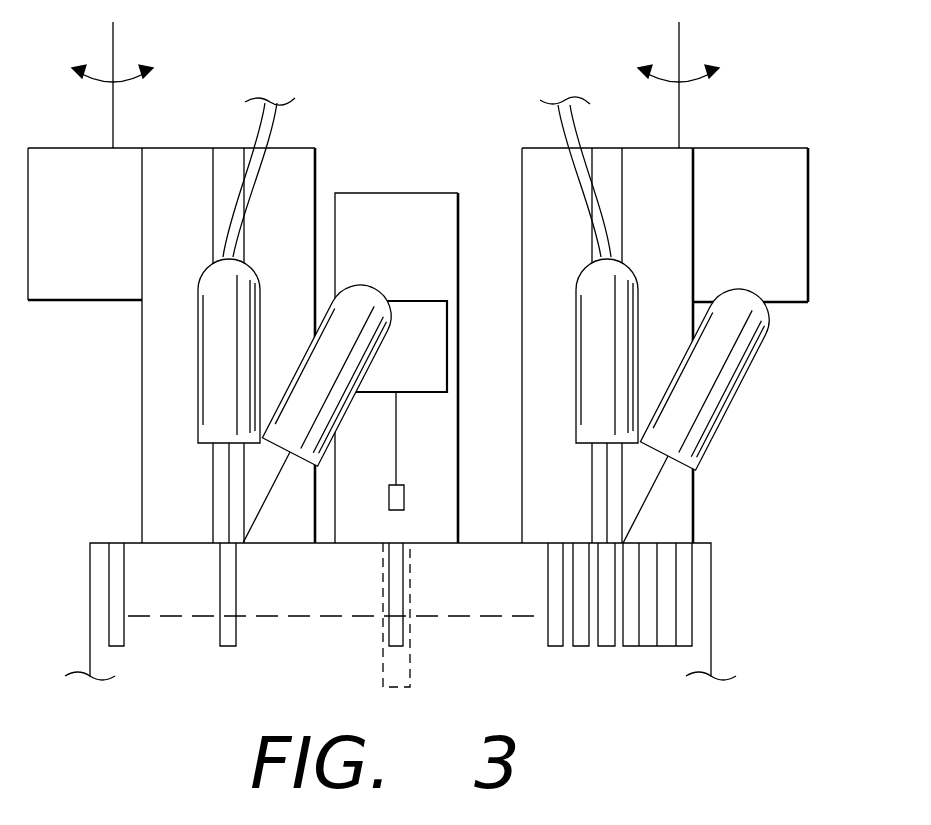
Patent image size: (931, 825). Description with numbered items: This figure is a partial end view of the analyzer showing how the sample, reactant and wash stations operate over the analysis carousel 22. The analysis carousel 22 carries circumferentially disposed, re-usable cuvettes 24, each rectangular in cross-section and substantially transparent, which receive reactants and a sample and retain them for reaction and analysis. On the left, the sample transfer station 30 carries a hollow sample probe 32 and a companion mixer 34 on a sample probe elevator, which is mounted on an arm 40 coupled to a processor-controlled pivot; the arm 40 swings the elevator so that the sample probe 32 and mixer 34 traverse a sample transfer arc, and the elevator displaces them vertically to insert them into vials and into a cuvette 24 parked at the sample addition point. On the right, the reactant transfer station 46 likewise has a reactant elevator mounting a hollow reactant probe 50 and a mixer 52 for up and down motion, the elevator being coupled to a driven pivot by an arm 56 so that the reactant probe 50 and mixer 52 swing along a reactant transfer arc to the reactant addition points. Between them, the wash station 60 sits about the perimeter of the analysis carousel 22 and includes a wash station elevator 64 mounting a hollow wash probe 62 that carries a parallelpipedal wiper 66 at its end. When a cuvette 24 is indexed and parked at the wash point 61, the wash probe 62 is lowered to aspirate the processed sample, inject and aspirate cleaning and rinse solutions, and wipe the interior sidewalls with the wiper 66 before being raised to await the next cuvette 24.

The analysis carousel 22 is at (713, 595).
The cuvettes 24 is at (665, 650).
The sample transfer station 30 is at (72, 322).
The sample probe 32 is at (227, 460).
The mixer 34 is at (263, 500).
The arm 40 is at (105, 239).
The reactant transfer station 46 is at (798, 330).
The reactant probe 50 is at (608, 468).
The mixer 52 is at (640, 513).
The arm 56 is at (773, 239).
The wash station 60 is at (387, 177).
The wash point 61 is at (425, 540).
The wash probe 62 is at (398, 468).
The wash station elevator 64 is at (434, 374).
The wiper 66 is at (389, 497).